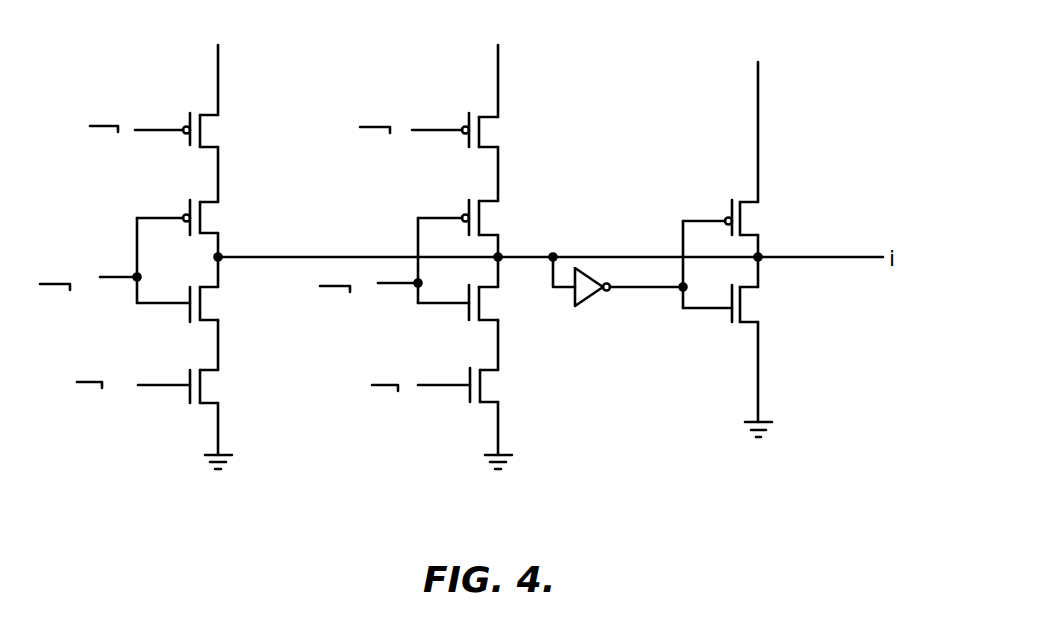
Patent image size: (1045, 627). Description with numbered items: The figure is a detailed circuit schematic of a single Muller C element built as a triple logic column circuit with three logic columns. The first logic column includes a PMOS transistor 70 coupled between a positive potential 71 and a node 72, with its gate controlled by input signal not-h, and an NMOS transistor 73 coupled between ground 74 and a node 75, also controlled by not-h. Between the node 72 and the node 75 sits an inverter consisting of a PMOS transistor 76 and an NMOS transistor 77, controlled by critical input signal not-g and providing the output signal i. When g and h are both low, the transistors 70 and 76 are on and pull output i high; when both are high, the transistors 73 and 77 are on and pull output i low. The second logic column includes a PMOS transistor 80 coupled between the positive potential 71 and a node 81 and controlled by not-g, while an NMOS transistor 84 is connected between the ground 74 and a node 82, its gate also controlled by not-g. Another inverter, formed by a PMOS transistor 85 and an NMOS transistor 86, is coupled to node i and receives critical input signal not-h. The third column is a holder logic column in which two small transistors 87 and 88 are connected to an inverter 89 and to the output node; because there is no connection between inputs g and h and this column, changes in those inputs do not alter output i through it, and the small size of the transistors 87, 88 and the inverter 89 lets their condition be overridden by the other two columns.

The PMOS transistor 70 is at (208, 138).
The positive potential 71 is at (216, 55).
The node 72 is at (218, 176).
The NMOS transistor 73 is at (210, 396).
The ground 74 is at (229, 459).
The node 75 is at (218, 348).
The PMOS transistor 76 is at (208, 223).
The NMOS transistor 77 is at (208, 311).
The PMOS transistor 80 is at (490, 138).
The node 81 is at (498, 176).
The node 82 is at (498, 345).
The NMOS transistor 84 is at (492, 390).
The PMOS transistor 85 is at (490, 226).
The NMOS transistor 86 is at (496, 303).
The small transistor 87 is at (750, 223).
The small transistor 88 is at (752, 306).
The inverter 89 is at (597, 295).